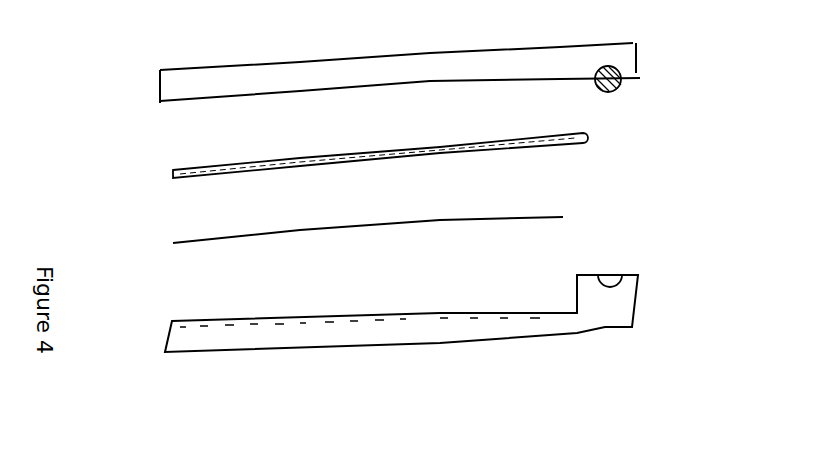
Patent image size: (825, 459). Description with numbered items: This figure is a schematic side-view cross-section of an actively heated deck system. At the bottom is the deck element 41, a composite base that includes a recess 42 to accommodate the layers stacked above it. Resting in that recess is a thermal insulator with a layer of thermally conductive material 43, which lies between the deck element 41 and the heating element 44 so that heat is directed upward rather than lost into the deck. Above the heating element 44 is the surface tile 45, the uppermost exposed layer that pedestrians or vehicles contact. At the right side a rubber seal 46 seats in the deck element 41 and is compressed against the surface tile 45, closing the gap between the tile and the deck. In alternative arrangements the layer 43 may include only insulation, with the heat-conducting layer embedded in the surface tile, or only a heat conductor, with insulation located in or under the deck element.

The deck element 41 is at (636, 301).
The recess 42 is at (422, 317).
The thermal insulator with a layer of thermally conductive material 43 is at (588, 218).
The heating element 44 is at (598, 140).
The surface tile 45 is at (636, 51).
The rubber seal 46 is at (640, 78).